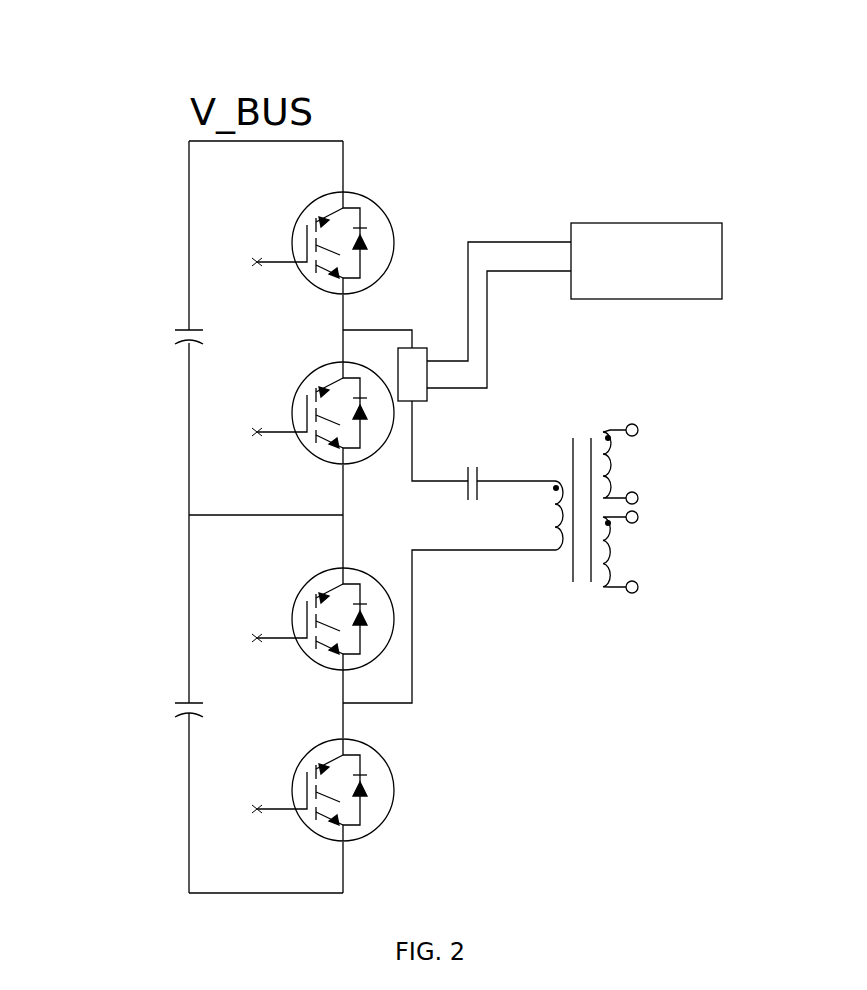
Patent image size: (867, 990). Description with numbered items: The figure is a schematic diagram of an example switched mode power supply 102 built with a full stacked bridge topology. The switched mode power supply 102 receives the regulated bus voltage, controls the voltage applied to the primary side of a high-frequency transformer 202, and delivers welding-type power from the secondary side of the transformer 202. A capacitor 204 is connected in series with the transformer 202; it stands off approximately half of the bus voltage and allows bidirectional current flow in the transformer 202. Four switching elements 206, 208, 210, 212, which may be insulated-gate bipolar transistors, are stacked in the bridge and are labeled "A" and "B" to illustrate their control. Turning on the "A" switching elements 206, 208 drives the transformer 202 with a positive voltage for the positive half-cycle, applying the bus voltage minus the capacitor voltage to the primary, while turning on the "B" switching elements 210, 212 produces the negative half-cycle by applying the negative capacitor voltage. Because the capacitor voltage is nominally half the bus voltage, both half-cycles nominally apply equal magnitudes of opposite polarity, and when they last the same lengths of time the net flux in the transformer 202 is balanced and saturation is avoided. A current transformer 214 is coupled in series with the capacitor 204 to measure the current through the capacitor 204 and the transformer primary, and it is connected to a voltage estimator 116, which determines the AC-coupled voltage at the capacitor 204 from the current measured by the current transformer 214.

The switched mode power supply 102 is at (148, 54).
The voltage estimator 116 is at (722, 223).
The high-frequency transformer 202 is at (580, 412).
The capacitor 204 is at (466, 501).
The switching element 206 is at (383, 213).
The switching element 208 is at (383, 763).
The switching element 210 is at (327, 363).
The switching element 212 is at (300, 595).
The current transformer 214 is at (427, 401).